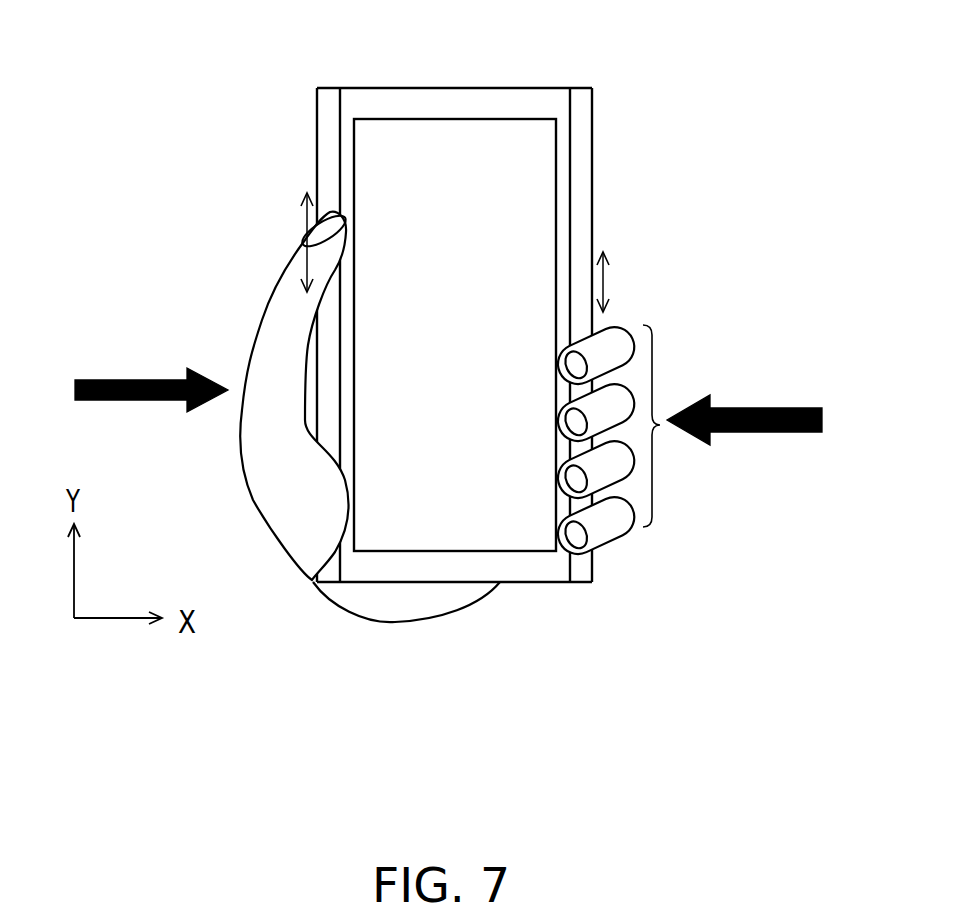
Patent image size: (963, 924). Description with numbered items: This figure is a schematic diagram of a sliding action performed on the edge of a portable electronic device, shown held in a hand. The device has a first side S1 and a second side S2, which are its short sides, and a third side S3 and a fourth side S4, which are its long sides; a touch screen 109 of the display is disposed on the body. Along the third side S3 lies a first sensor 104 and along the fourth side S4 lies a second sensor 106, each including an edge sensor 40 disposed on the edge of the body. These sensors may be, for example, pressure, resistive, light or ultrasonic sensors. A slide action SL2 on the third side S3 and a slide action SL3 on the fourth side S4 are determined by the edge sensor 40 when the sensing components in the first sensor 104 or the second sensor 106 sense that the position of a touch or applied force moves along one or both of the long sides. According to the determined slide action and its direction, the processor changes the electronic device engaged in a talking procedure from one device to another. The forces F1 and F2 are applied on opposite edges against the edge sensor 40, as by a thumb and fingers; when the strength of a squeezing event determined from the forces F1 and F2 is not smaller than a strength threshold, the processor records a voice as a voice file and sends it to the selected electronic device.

The first sensor 104 is at (317, 110).
The second sensor 106 is at (594, 117).
The touch screen 109 is at (515, 103).
The edge sensor 40 is at (325, 175).
The first side S1 is at (420, 86).
The second side S2 is at (537, 584).
The third side S3 is at (316, 368).
The fourth side S4 is at (594, 227).
The slide action SL2 is at (283, 242).
The slide action SL3 is at (626, 282).
The force F1 is at (151, 373).
The force F2 is at (744, 405).